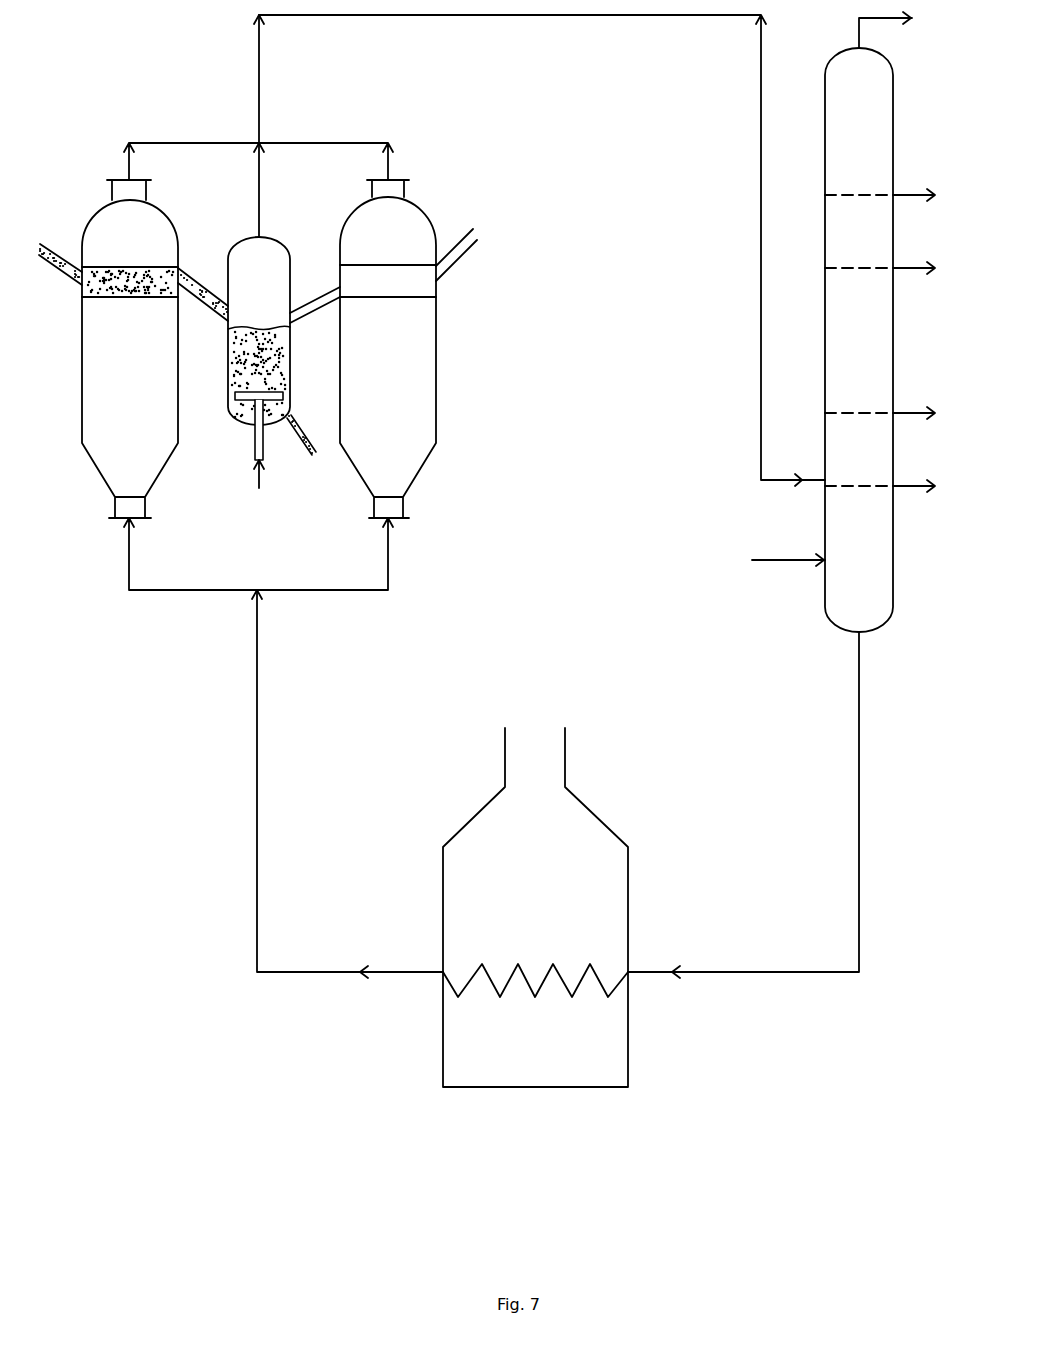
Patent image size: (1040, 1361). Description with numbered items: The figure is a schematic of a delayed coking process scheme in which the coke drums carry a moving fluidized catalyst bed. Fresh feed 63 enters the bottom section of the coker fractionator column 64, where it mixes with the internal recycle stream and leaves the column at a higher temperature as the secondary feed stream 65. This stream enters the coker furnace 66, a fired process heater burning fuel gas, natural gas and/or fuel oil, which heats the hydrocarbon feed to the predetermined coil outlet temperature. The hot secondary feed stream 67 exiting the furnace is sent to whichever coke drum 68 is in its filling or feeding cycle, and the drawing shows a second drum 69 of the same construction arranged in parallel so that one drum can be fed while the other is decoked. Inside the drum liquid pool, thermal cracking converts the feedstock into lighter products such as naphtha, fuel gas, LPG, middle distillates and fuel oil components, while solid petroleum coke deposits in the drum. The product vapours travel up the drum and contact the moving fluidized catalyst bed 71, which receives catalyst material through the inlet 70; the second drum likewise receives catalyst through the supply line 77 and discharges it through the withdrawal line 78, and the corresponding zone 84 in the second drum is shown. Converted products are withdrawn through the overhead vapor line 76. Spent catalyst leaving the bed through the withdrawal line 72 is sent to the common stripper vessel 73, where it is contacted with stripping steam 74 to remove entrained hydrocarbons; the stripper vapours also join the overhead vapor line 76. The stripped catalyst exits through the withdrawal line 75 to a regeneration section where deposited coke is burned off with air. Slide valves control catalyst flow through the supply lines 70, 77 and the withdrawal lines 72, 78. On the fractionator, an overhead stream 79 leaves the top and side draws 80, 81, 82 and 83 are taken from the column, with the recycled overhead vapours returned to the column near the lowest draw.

The fresh feed 63 is at (760, 553).
The coker fractionator column 64 is at (824, 108).
The secondary feed stream 65 is at (859, 708).
The coker furnace 66 is at (478, 807).
The hot secondary feed stream 67 is at (380, 976).
The coke drum 68 is at (82, 342).
The second reactor 69 is at (436, 360).
The inlet 70 is at (46, 250).
The moving fluidized catalyst bed 71 is at (178, 266).
The withdrawal line 72 is at (198, 310).
The stripper vessel 73 is at (290, 257).
The stripping steam 74 is at (255, 477).
The withdrawal line 75 is at (307, 453).
The overhead vapor line 76 is at (260, 112).
The catalyst supply line 77 is at (452, 262).
The withdrawal line 78 is at (316, 315).
The overhead stream 79 is at (898, 28).
The first side draw 80 is at (892, 195).
The second side draw 81 is at (892, 268).
The third side draw 82 is at (892, 413).
The fourth side draw 83 is at (892, 486).
The catalyst zone 84 is at (340, 276).